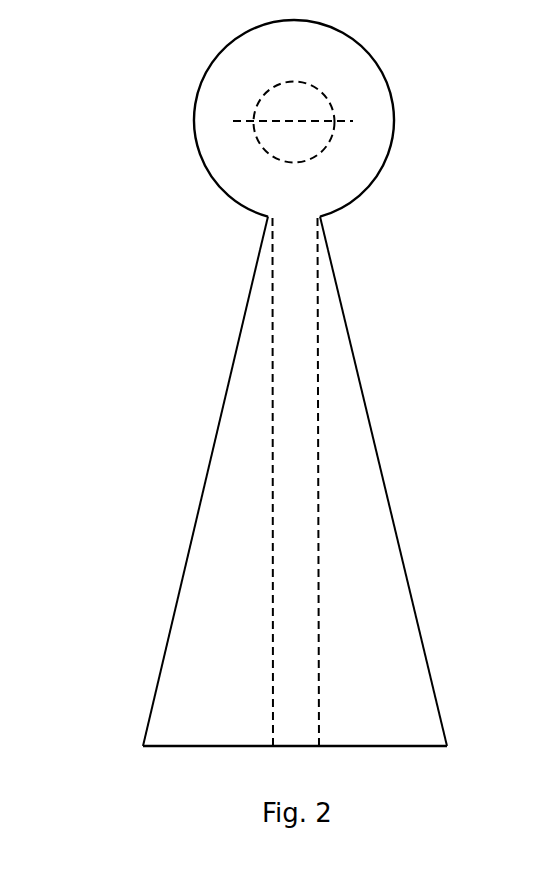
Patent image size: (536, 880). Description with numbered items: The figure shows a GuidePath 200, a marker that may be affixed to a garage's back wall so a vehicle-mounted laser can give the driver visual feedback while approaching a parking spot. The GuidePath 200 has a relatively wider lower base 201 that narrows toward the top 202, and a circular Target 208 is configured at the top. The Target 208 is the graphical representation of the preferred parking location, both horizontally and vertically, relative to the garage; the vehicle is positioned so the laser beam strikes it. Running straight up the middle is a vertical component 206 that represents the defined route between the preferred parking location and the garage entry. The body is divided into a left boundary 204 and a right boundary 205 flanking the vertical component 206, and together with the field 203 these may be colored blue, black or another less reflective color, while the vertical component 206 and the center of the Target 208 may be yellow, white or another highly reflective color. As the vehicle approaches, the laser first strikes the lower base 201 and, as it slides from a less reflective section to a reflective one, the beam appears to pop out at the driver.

The GuidePath 200 is at (113, 190).
The lower base 201 is at (153, 762).
The top 202 is at (333, 233).
The field 203 is at (377, 55).
The left boundary 204 is at (235, 490).
The right boundary 205 is at (373, 598).
The vertical component 206 is at (297, 440).
The Target 208 is at (299, 143).